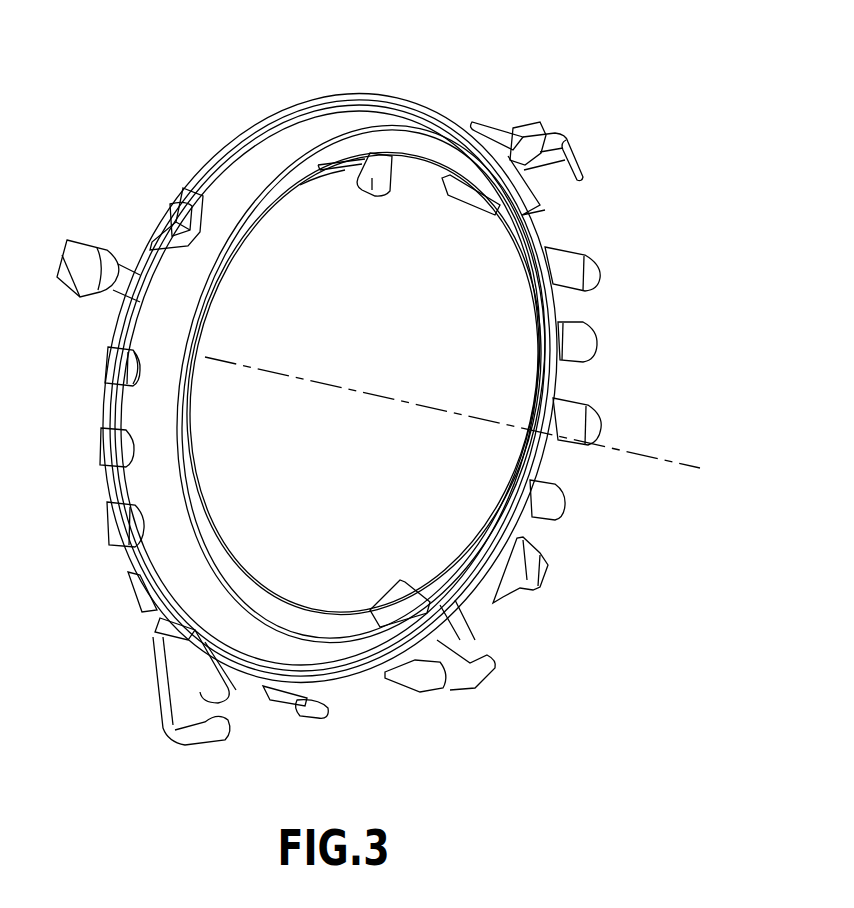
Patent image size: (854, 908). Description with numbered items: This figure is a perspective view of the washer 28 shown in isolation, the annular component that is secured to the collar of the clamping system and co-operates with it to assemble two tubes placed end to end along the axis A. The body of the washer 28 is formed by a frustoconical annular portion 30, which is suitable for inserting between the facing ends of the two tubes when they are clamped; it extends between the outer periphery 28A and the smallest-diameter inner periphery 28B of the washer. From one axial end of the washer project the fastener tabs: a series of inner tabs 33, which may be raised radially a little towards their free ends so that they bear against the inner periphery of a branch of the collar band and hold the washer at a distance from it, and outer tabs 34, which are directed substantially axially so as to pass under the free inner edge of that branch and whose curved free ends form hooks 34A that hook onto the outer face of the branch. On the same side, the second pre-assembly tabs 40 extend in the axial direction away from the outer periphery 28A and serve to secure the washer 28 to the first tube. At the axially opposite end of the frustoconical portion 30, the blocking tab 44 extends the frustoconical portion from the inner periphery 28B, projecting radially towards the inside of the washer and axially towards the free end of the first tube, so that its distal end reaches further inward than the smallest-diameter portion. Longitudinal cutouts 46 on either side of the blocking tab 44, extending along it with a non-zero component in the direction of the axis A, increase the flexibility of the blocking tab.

The washer 28 is at (641, 98).
The outer periphery 28A is at (122, 326).
The inner periphery 28B is at (183, 440).
The frustoconical annular portion 30 is at (270, 190).
The inner tabs 33 is at (585, 346).
The outer tabs 34 is at (578, 270).
The hooks 34A is at (135, 376).
The second pre-assembly tabs 40 is at (74, 232).
The blocking tab 44 is at (378, 188).
The cutouts 46 is at (371, 153).
The axis A is at (700, 466).